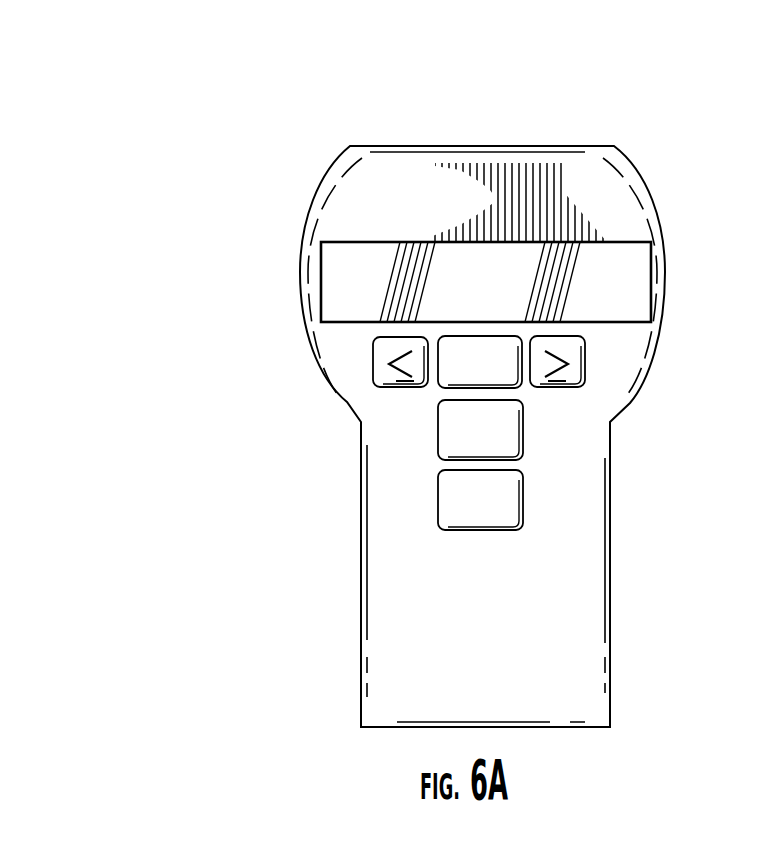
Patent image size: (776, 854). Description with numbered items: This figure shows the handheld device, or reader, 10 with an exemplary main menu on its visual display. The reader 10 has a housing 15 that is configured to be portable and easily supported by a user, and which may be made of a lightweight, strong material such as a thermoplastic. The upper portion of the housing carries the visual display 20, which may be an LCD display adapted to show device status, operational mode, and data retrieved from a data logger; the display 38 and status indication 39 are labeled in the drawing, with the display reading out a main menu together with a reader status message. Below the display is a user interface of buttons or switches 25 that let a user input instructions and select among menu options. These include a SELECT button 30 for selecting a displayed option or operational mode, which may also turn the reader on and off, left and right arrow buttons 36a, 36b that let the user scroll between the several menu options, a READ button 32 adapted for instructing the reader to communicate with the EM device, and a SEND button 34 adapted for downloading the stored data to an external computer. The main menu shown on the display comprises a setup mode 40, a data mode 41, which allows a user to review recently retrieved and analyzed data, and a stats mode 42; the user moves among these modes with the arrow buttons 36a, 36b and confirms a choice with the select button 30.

The handheld device 10 is at (677, 151).
The housing 15 is at (613, 697).
The visual display 20 is at (652, 296).
The buttons or switches 25 is at (572, 449).
The SELECT button 30 is at (438, 389).
The READ button 32 is at (523, 448).
The SEND button 34 is at (523, 487).
The left arrow button 36a is at (373, 372).
The right arrow button 36b is at (587, 376).
The display 38 is at (347, 244).
The reader status indicator 39 is at (652, 261).
The setup mode 40 is at (322, 310).
The data mode 41 is at (441, 324).
The stats mode 42 is at (650, 308).